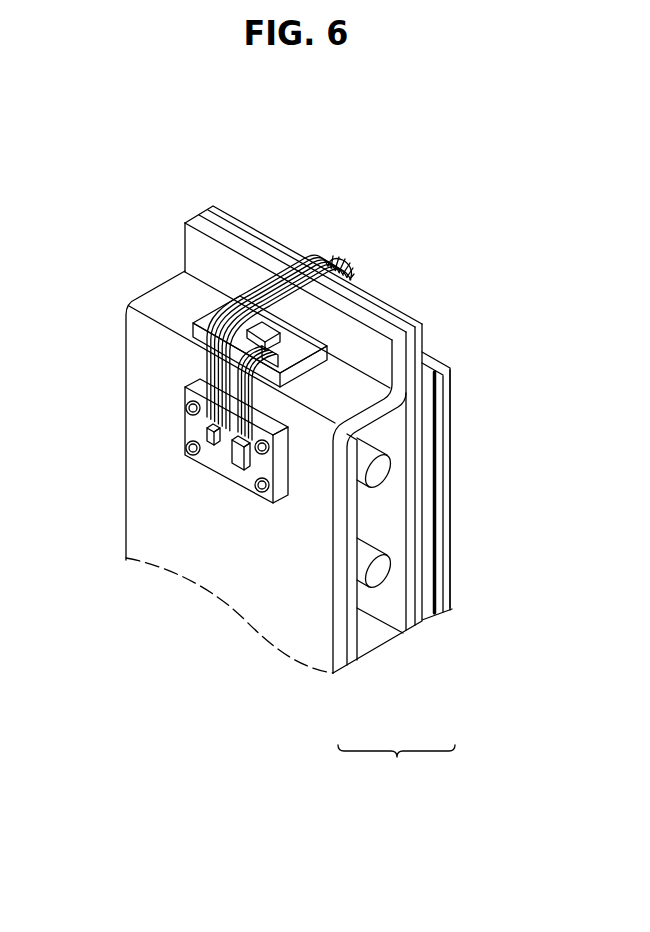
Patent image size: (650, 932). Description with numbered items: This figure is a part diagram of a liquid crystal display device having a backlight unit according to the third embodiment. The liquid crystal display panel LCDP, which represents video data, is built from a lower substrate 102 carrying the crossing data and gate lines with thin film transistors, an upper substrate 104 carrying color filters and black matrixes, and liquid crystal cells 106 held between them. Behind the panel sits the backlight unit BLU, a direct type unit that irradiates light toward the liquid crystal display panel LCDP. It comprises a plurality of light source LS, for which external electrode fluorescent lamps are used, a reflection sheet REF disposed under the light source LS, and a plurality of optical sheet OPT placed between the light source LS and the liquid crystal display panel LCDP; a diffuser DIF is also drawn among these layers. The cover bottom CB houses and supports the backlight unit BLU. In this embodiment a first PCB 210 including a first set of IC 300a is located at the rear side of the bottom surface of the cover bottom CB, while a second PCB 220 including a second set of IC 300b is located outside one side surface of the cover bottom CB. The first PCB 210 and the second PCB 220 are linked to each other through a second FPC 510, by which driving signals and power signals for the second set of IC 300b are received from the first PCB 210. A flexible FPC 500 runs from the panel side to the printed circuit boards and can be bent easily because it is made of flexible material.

The second PCB 220 is at (207, 322).
The FPC 500 is at (332, 253).
The second set of IC 300b is at (268, 331).
The second FPC 510 is at (313, 332).
The cover bottom CB is at (140, 440).
The first PCB 210 is at (213, 460).
The first set of IC 300a is at (240, 468).
The upper substrate 104 is at (437, 613).
The liquid crystal cells 106 is at (428, 620).
The lower substrate 102 is at (417, 624).
The liquid crystal display panel LCDP is at (477, 527).
The reflection sheet REF is at (353, 662).
The light source LS is at (377, 573).
The diffuser plate DIF is at (405, 632).
The optical sheet OPT is at (415, 623).
The backlight unit BLU is at (396, 763).